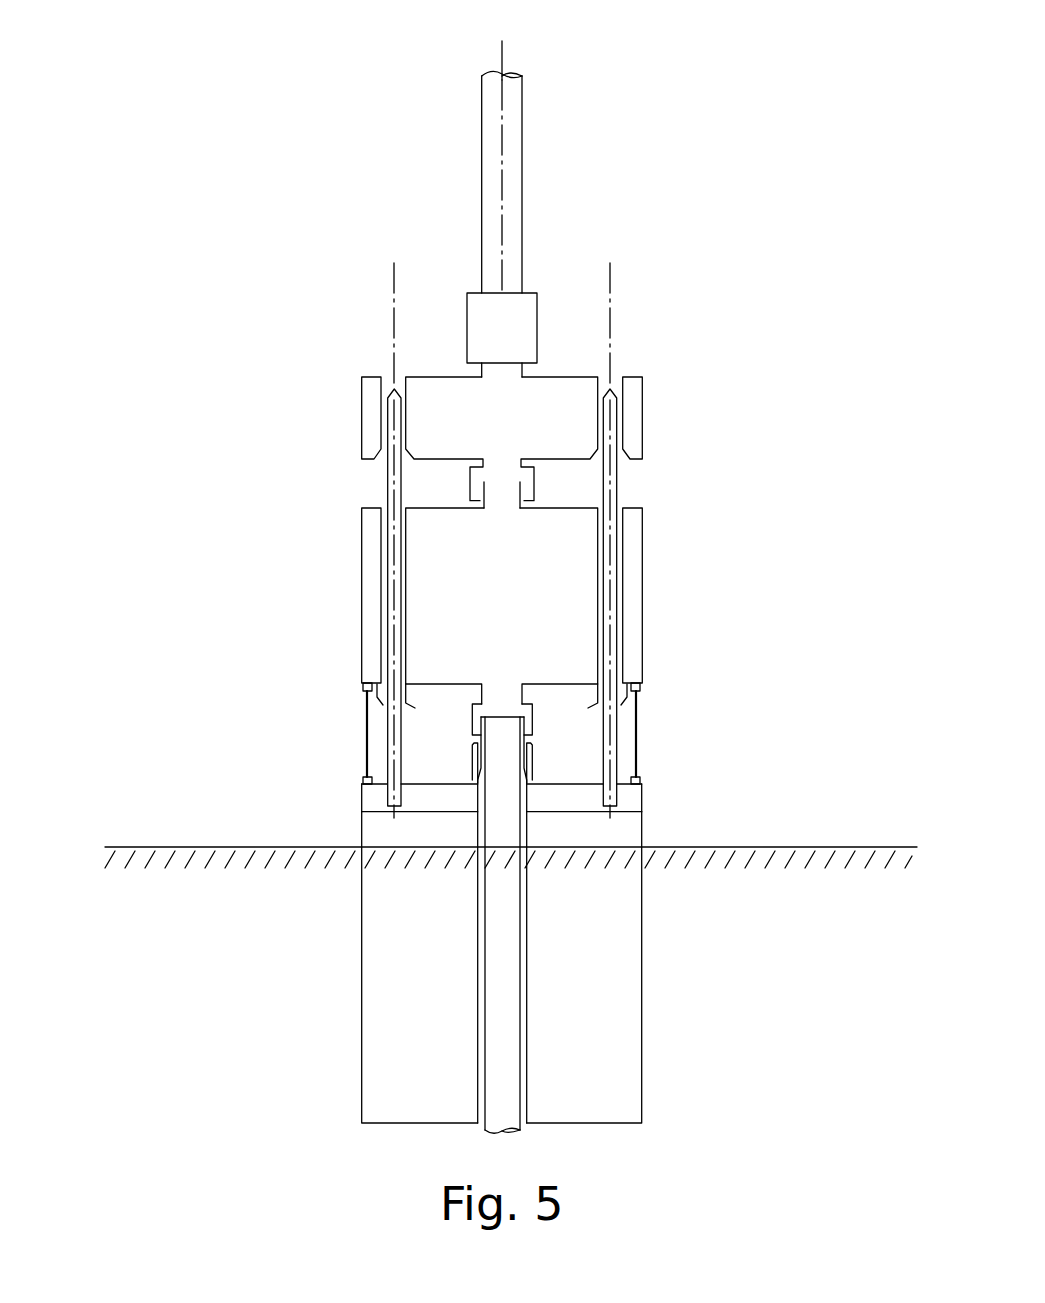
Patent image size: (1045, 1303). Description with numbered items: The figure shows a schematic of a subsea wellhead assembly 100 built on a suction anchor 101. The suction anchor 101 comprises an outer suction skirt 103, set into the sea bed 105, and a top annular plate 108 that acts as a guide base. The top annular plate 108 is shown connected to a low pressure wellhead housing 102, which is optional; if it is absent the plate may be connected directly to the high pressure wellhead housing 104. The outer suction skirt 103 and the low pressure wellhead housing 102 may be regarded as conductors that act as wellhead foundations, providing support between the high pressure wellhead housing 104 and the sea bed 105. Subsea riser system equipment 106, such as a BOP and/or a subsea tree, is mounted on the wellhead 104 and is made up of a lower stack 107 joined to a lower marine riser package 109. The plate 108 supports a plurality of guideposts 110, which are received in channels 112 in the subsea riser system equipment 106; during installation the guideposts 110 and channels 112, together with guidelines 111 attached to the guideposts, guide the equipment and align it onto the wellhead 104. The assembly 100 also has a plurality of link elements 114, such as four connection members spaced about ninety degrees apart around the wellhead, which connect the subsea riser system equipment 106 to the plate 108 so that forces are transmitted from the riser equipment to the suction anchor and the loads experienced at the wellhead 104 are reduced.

The subsea wellhead assembly 100 is at (753, 277).
The suction anchor 101 is at (690, 803).
The low pressure wellhead housing 102 is at (477, 832).
The outer suction skirt 103 is at (643, 942).
The high pressure wellhead housing 104 is at (526, 740).
The sea bed 105 is at (125, 842).
The subsea riser system equipment 106 is at (809, 415).
The lower stack 107 is at (643, 555).
The top annular plate 108 is at (362, 792).
The lower marine riser package 109 is at (643, 393).
The guidepost 110 is at (617, 478).
The guideline 111 is at (610, 292).
The channel 112 is at (383, 433).
The link element 114 is at (362, 707).